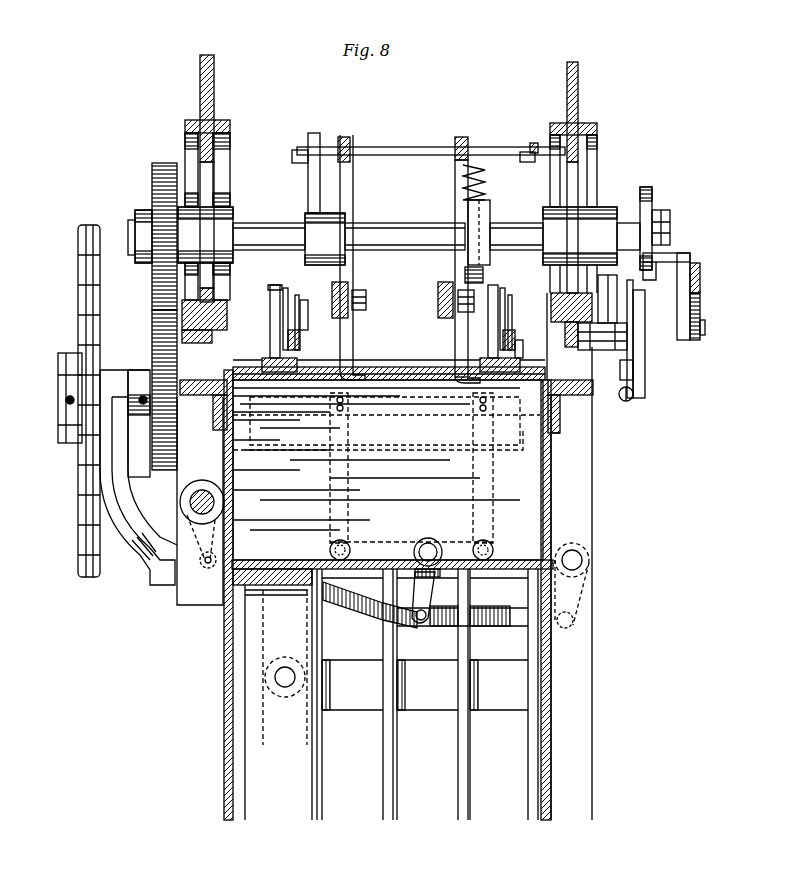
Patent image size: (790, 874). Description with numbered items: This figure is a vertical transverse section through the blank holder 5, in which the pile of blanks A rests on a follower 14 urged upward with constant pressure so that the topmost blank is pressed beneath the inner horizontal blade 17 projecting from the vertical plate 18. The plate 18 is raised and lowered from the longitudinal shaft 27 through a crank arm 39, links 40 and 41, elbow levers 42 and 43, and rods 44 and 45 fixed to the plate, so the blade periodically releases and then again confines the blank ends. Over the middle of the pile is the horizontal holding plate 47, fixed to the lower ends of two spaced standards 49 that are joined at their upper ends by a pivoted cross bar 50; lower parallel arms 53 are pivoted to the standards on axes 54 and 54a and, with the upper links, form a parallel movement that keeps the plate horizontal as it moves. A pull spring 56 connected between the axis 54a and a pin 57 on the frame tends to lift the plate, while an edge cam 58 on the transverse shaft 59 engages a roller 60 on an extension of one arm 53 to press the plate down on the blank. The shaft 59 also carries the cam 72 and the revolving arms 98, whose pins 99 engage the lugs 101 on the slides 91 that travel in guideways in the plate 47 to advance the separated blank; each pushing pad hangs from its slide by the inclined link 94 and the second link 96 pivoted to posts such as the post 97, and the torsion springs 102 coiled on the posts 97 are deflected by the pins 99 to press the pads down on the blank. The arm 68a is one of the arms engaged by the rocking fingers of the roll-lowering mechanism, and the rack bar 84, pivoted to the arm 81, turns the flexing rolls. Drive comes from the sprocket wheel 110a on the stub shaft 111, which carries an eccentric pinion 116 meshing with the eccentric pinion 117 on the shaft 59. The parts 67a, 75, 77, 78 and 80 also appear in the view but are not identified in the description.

The holder 5 is at (376, 560).
The follower 14 is at (290, 590).
The inner horizontal blade 17 is at (366, 370).
The vertical plate 18 is at (404, 415).
The shaft 27 is at (207, 489).
The crank arm 39 is at (200, 550).
The link 40 is at (358, 606).
The link 41 is at (430, 618).
The elbow lever 42 is at (431, 548).
The elbow lever 43 is at (561, 545).
The rod 44 is at (350, 522).
The rod 45 is at (493, 522).
The horizontal plate 47 is at (391, 378).
The standards 49 is at (353, 191).
The horizontal cross bar 50 is at (398, 147).
The lower horizontal parallel arms 53 is at (319, 320).
The axis 54 is at (357, 305).
The axis 54a is at (438, 301).
The pull spring 56 is at (463, 181).
The pin 57 is at (487, 148).
The edge cam 58 is at (483, 283).
The transverse rotary shaft 59 is at (282, 246).
The roller 60 is at (472, 313).
The nut 67a is at (628, 336).
The arm 68a is at (613, 299).
The cam 72 is at (635, 309).
The nut 75 is at (660, 212).
The lever 77 is at (690, 322).
The block 78 is at (698, 270).
The pin 80 is at (621, 396).
The arm 81 is at (641, 356).
The rack bar 84 is at (622, 371).
The slides 91 is at (518, 361).
The inclined link 94 is at (289, 298).
The second link 96 is at (272, 335).
The post 97 is at (275, 307).
The arms 98 is at (316, 135).
The pins 99 is at (297, 158).
The upstanding lugs 101 is at (297, 338).
The torsion springs 102 is at (300, 320).
The sprocket wheel 110a is at (100, 333).
The transverse stub shaft 111 is at (58, 393).
The pinion 116 is at (152, 349).
The pinion 117 is at (152, 282).
The pile of blanks A is at (388, 470).